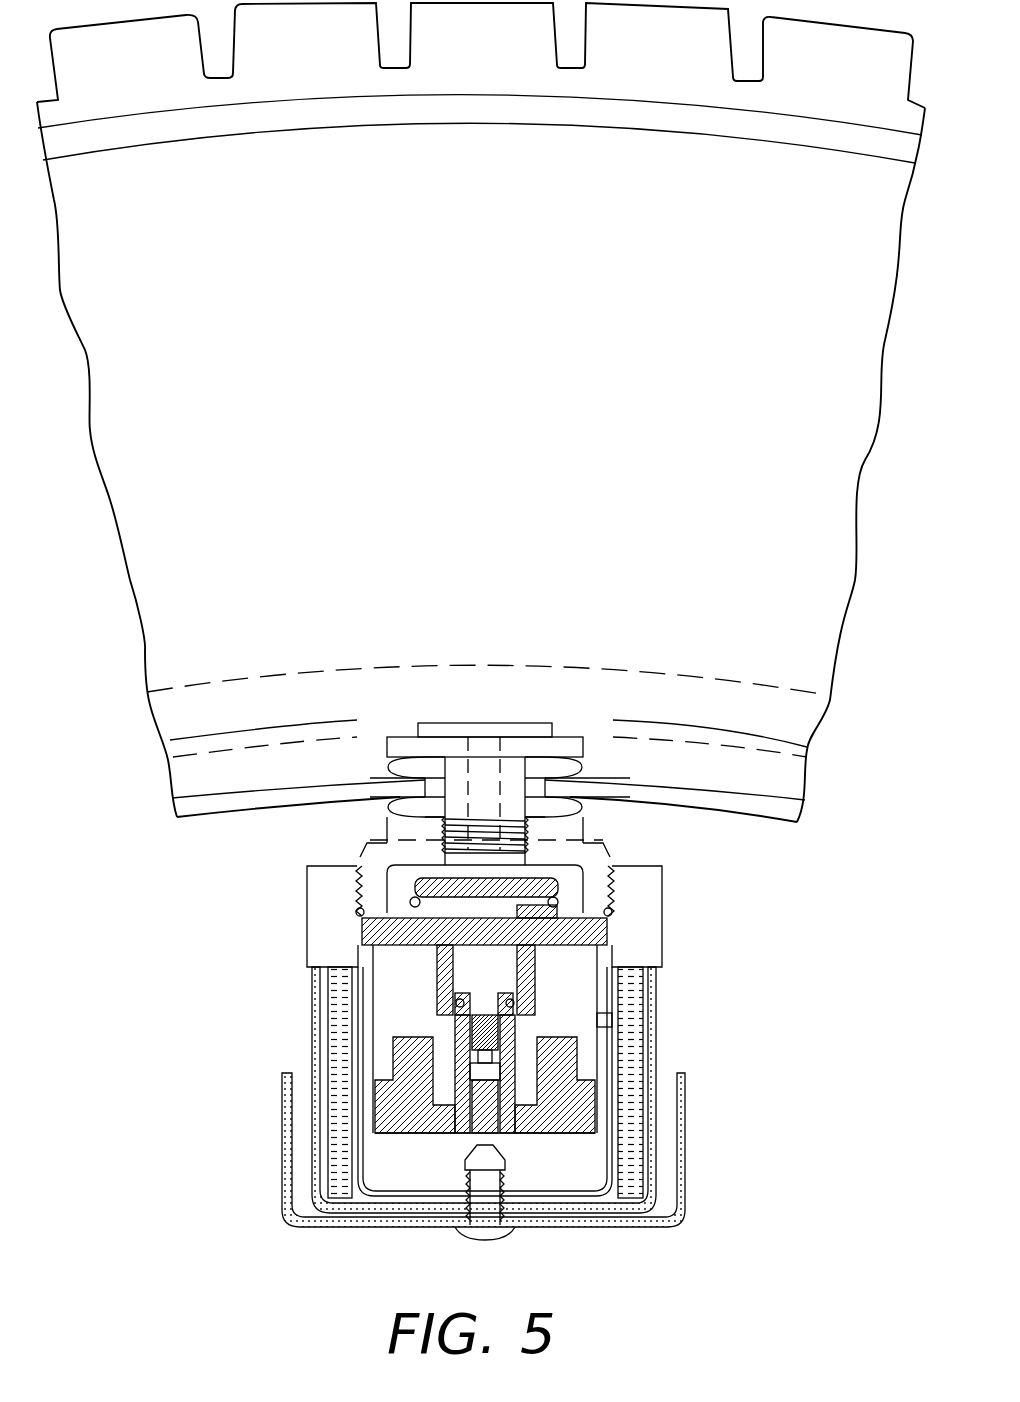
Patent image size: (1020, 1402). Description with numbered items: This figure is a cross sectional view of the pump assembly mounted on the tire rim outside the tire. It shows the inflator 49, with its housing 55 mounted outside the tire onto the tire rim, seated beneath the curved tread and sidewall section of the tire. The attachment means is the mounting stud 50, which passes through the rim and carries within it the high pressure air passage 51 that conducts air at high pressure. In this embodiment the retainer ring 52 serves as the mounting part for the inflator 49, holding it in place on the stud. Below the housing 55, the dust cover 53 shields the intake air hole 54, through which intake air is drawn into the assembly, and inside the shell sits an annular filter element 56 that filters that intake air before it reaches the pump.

The inflator 49 is at (256, 1166).
The mounting stud 50 is at (528, 727).
The high pressure air passage 51 is at (482, 727).
The retainer ring 52 is at (367, 847).
The dust cover 53 is at (688, 1182).
The intake air hole 54 is at (655, 1097).
The housing 55 is at (665, 902).
The annular filter element 56 is at (633, 1025).